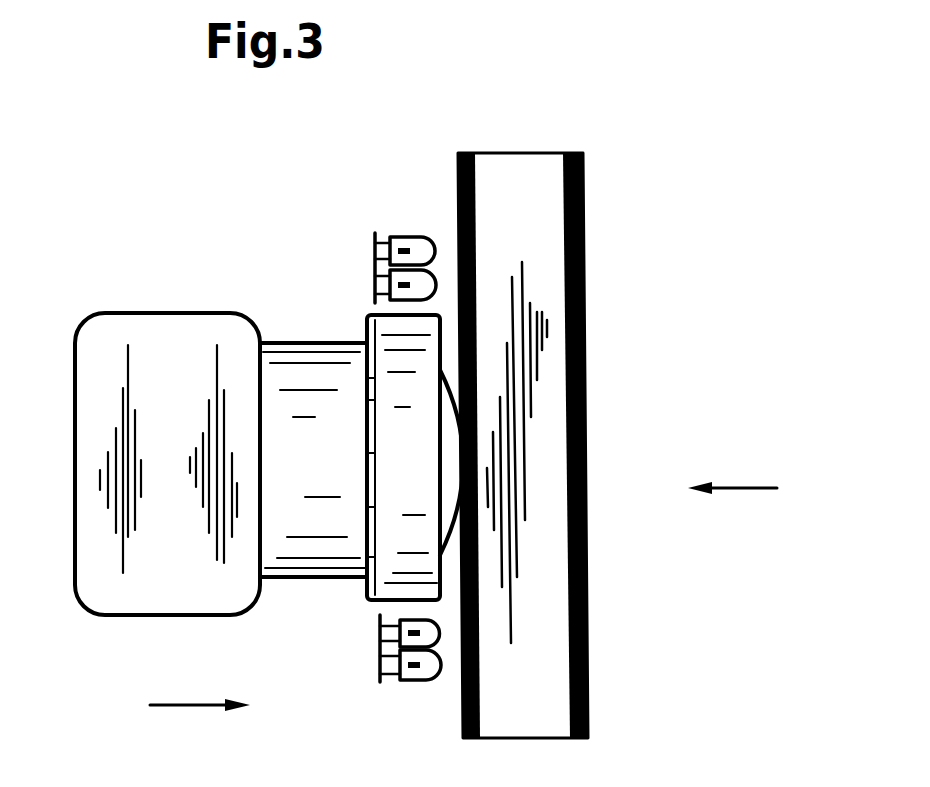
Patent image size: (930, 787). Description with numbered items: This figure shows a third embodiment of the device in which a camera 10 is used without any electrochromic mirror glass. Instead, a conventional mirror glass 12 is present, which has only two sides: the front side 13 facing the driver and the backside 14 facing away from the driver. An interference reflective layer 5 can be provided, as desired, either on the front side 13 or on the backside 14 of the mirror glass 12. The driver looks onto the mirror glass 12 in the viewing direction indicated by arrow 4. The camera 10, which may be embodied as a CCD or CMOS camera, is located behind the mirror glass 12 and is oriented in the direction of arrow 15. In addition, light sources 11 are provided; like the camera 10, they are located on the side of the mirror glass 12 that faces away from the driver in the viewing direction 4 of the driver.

The arrow (viewing direction of the driver) 4 is at (732, 468).
The interference reflective layer 5 is at (458, 172).
The camera 10 is at (110, 593).
The light sources 11 is at (397, 283).
The mirror glass 12 is at (548, 275).
The front side 13 is at (591, 356).
The backside 14 is at (478, 681).
The arrow (camera orientation direction) 15 is at (189, 710).